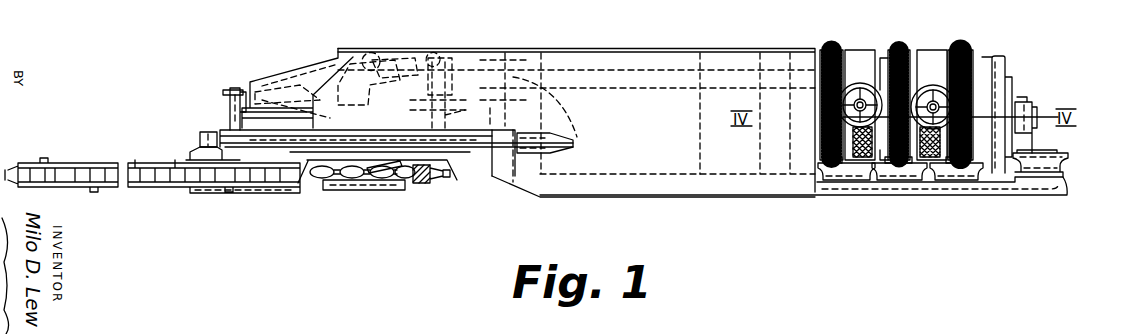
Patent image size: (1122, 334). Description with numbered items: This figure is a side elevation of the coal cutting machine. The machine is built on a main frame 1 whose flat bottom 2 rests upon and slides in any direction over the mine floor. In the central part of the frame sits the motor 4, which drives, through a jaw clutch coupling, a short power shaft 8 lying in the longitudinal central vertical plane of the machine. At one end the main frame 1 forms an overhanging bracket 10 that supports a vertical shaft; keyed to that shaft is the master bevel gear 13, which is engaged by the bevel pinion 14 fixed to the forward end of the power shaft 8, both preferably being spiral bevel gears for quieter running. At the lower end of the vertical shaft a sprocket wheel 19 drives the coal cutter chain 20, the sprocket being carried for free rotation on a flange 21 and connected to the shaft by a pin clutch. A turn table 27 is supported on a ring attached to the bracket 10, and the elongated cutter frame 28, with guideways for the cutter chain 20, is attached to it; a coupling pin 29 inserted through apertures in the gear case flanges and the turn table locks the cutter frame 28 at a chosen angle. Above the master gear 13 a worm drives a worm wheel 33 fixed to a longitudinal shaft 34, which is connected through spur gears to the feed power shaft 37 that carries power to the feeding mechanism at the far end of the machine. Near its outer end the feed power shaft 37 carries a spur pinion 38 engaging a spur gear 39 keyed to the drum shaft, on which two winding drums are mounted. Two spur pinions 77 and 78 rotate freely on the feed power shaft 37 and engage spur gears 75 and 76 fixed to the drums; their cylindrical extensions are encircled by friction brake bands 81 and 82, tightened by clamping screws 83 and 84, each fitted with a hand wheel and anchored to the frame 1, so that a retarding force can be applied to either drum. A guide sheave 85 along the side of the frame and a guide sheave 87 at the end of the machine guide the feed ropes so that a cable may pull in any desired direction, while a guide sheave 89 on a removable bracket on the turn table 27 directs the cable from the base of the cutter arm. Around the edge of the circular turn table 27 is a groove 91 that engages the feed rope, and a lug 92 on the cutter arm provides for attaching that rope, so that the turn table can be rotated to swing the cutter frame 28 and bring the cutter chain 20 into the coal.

The main frame 1 is at (609, 165).
The flat bottom 2 is at (805, 197).
The motor 4 is at (623, 68).
The power shaft 8 is at (506, 50).
The overhanging bracket 10 is at (433, 130).
The master bevel gear 13 is at (321, 87).
The bevel pinion 14 is at (493, 150).
The sprocket wheel 19 is at (320, 186).
The coal cutter chain 20 is at (423, 184).
The flange 21 is at (370, 191).
The turn table 27 is at (240, 116).
The cutter frame 28 is at (150, 189).
The coupling pin 29 is at (237, 87).
The worm wheel 33 is at (387, 50).
The shaft 34 is at (441, 60).
The feed power shaft 37 is at (666, 62).
The spur pinion 38 is at (900, 50).
The spur gear 39 is at (901, 145).
The spur gear 75 is at (833, 164).
The spur gear 76 is at (953, 164).
The spur pinion 77 is at (830, 50).
The spur pinion 78 is at (970, 52).
The friction brake band 81 is at (864, 58).
The friction brake band 82 is at (928, 58).
The clamping screw 83 is at (859, 98).
The clamping screw 84 is at (936, 100).
The guide sheave 85 is at (892, 181).
The guide sheave 87 is at (1066, 160).
The guide sheave 89 is at (245, 0).
The groove 91 is at (211, 132).
The lug 92 is at (194, 148).